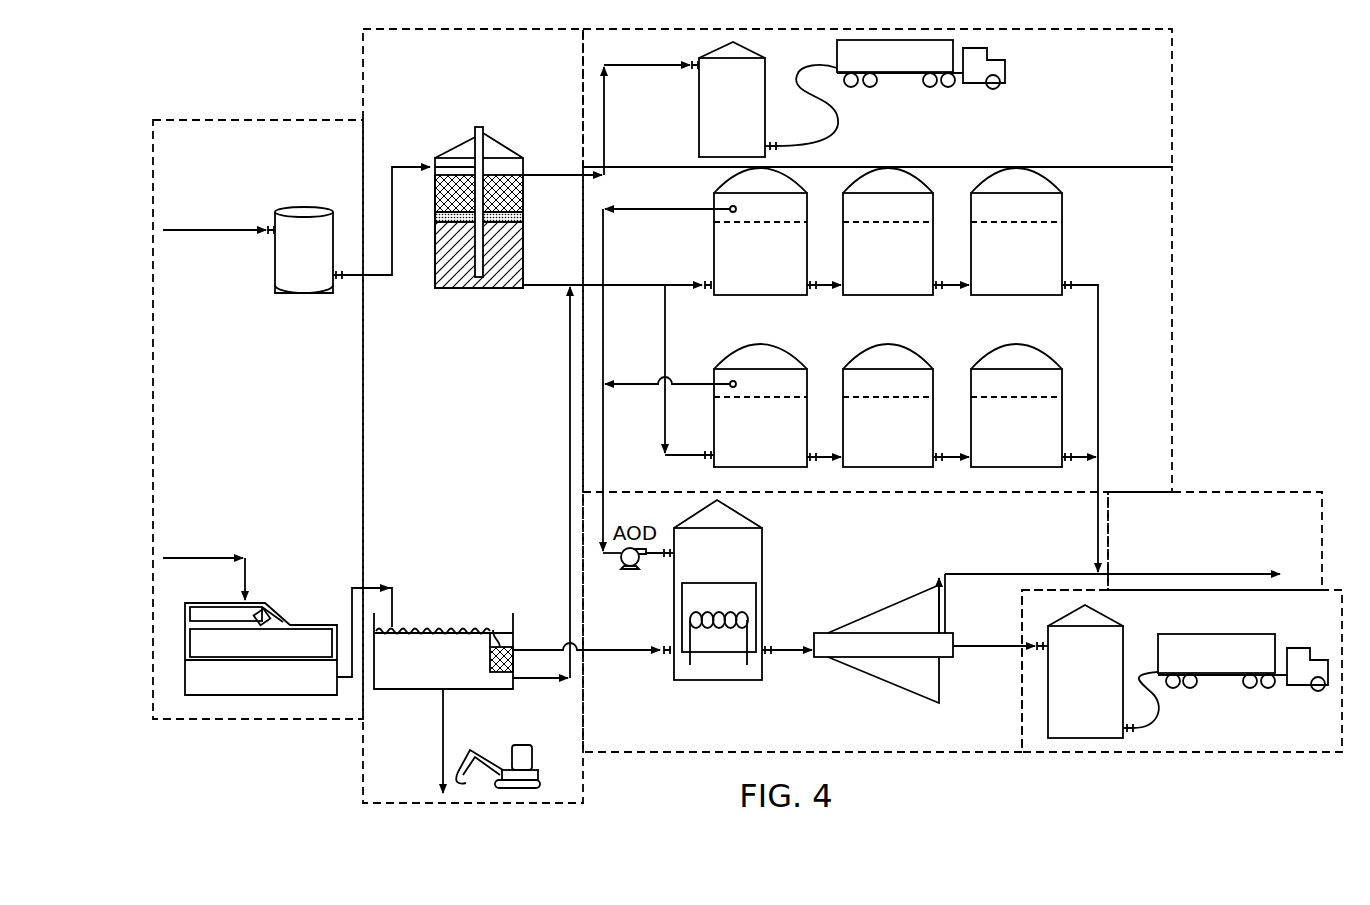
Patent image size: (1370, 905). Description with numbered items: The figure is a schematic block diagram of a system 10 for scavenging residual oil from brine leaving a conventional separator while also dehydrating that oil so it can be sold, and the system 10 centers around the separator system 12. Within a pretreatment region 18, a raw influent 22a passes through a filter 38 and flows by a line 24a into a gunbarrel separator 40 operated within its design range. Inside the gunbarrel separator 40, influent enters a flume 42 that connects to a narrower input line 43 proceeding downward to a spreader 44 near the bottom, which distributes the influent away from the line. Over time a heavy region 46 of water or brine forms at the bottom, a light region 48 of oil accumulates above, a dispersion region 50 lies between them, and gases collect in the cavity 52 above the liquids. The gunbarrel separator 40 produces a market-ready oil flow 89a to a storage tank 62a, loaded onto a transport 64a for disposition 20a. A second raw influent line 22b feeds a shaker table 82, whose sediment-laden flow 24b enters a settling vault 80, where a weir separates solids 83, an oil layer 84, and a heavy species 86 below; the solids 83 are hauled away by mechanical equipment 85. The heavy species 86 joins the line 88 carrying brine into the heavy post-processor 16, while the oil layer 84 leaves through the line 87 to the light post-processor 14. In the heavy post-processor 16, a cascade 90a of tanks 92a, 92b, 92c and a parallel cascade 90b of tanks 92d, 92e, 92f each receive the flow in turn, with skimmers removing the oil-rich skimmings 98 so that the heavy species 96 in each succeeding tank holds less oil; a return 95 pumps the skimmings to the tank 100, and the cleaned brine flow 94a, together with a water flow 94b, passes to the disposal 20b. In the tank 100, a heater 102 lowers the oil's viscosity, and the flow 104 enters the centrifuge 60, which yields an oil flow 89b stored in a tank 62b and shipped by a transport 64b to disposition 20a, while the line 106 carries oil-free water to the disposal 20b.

The system 10 is at (262, 97).
The separator system 12 is at (473, 416).
The light post-processor 14 is at (845, 622).
The heavy post-processor 16 is at (877, 329).
The pretreatment subsystem 18 is at (258, 419).
The disposition 20a is at (962, 390).
The disposal 20b is at (1215, 541).
The raw influent 22a is at (215, 232).
The raw influent line 22b is at (163, 557).
The line 24a is at (373, 278).
The flow 24b is at (395, 588).
The filter 38 is at (304, 250).
The gunbarrel separator 40 is at (455, 145).
The flume 42 is at (485, 130).
The input line 43 is at (487, 232).
The spreader 44 is at (487, 268).
The heavy region 46 is at (507, 278).
The light region 48 is at (437, 200).
The dispersion region 50 is at (437, 217).
The cavity 52 is at (497, 150).
The centrifuge 60 is at (883, 644).
The storage tank 62a is at (732, 99).
The tank 62b is at (1085, 671).
The transport 64a is at (885, 95).
The transport 64b is at (1225, 683).
The settling vault 80 is at (472, 488).
The shaker table 82 is at (261, 649).
The solids 83 is at (443, 778).
The oil layer 84 is at (492, 627).
The mechanical equipment 85 is at (480, 748).
The heavy species 86 is at (425, 672).
The line 87 is at (627, 653).
The line 88 is at (547, 290).
The flow 89a is at (605, 113).
The flow 89b is at (977, 650).
The cascade 90a is at (1090, 250).
The parallel cascade 90b is at (1105, 418).
The tank 92a is at (779, 297).
The tank 92b is at (888, 231).
The tank 92c is at (1016, 231).
The tank 92d is at (785, 470).
The tank 92e is at (888, 405).
The tank 92f is at (1016, 405).
The flow 94a is at (1098, 350).
The water discharge line 94b is at (976, 573).
The return 95 is at (638, 208).
The heavy species 96 is at (885, 297).
The oil-rich skimmings 98 is at (848, 210).
The tank 100 is at (718, 590).
The heater 102 is at (757, 586).
The flow 104 is at (788, 653).
The line 106 is at (953, 605).